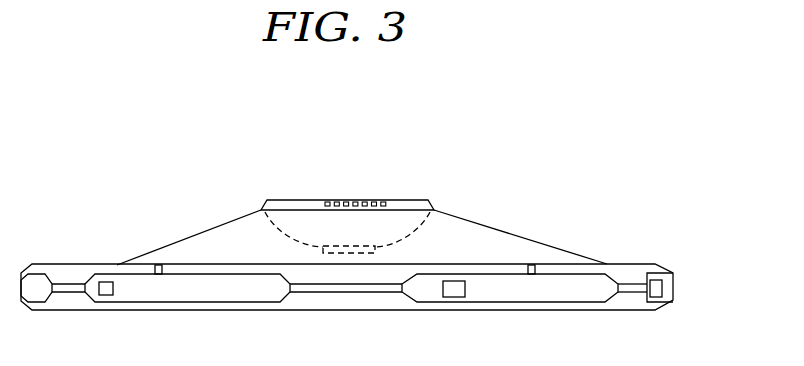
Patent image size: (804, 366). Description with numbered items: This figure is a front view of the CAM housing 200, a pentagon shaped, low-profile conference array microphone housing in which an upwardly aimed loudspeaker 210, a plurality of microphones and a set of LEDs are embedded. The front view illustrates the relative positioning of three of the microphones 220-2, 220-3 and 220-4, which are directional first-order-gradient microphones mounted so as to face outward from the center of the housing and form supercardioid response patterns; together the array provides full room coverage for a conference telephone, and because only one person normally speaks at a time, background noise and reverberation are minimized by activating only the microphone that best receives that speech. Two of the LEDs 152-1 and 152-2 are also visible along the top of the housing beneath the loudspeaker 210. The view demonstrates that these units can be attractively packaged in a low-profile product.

The CAM housing 200 is at (361, 100).
The loudspeaker 210 is at (417, 200).
The LED 152-1 is at (158, 265).
The LED 152-2 is at (533, 265).
The microphone 220-2 is at (101, 296).
The microphone 220-3 is at (453, 297).
The microphone 220-4 is at (665, 303).